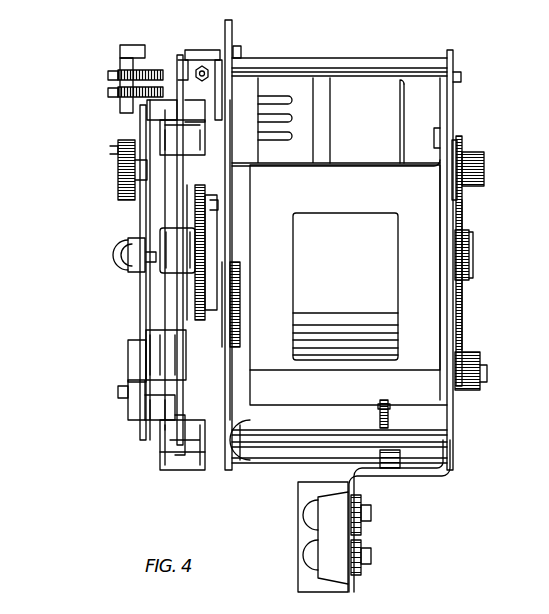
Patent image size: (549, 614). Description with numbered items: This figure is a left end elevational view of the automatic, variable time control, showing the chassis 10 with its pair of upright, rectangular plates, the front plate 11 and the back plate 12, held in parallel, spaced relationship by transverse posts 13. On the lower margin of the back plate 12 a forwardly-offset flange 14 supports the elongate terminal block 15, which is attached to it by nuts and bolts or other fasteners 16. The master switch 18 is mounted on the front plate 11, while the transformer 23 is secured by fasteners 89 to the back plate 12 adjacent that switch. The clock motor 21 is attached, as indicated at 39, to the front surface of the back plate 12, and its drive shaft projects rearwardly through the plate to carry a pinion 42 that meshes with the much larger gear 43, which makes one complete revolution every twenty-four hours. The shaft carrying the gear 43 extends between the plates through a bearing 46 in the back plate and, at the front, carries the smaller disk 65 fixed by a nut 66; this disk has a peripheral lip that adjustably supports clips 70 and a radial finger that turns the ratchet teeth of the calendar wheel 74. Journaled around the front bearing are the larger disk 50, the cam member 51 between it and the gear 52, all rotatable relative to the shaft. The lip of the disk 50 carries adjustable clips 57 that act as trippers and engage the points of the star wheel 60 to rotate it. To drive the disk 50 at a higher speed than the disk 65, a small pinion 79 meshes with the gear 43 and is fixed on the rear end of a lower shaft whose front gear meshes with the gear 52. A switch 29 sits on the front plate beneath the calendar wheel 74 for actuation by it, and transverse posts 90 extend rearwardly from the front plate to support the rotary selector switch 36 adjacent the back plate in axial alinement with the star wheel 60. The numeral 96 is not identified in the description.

The chassis 10 is at (500, 482).
The front plate 11 is at (232, 36).
The back plate 12 is at (453, 112).
The transverse posts 13 is at (312, 58).
The forwardly-offset flange 14 is at (355, 492).
The terminal block 15 is at (298, 540).
The fasteners 16 is at (372, 562).
The master switch 18 is at (256, 124).
The clock motor 21 is at (369, 124).
The transformer 23 is at (352, 287).
The switch 29 is at (205, 52).
The rotary selector switch 36 is at (378, 416).
The clock motor mounting 39 is at (438, 86).
The pinion 42 is at (485, 166).
The gear 43 is at (468, 325).
The bearing 46 is at (448, 248).
The disk 50 is at (184, 168).
The cam member 51 is at (205, 213).
The gear 52 is at (240, 202).
The clips 57 is at (212, 468).
The star wheel 60 is at (128, 360).
The disk 65 is at (140, 290).
The nut 66 is at (115, 258).
The clips 70 is at (130, 420).
The calendar wheel 74 is at (120, 190).
The pinion 79 is at (482, 382).
The fasteners 89 is at (463, 136).
The transverse posts 90 is at (273, 465).
The screw 96 is at (112, 72).